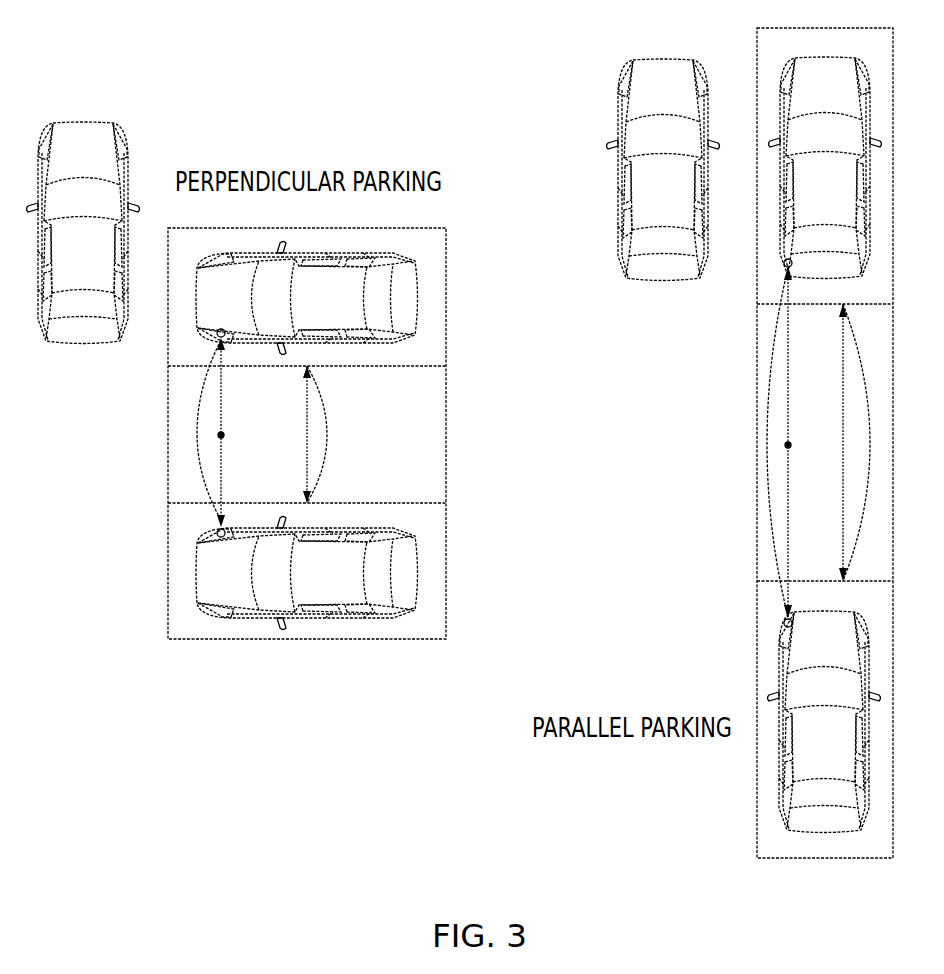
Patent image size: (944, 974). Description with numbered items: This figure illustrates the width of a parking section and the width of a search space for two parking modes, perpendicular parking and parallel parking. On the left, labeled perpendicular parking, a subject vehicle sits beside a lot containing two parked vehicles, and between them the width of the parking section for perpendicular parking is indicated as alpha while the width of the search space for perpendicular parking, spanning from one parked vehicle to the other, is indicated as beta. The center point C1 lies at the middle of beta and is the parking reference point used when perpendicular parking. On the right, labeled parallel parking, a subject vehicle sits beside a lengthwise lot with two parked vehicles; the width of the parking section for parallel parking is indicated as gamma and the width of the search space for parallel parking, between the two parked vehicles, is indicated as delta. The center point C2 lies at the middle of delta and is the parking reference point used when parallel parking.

The center point of β C1 is at (235, 436).
The center point of δ C2 is at (803, 446).